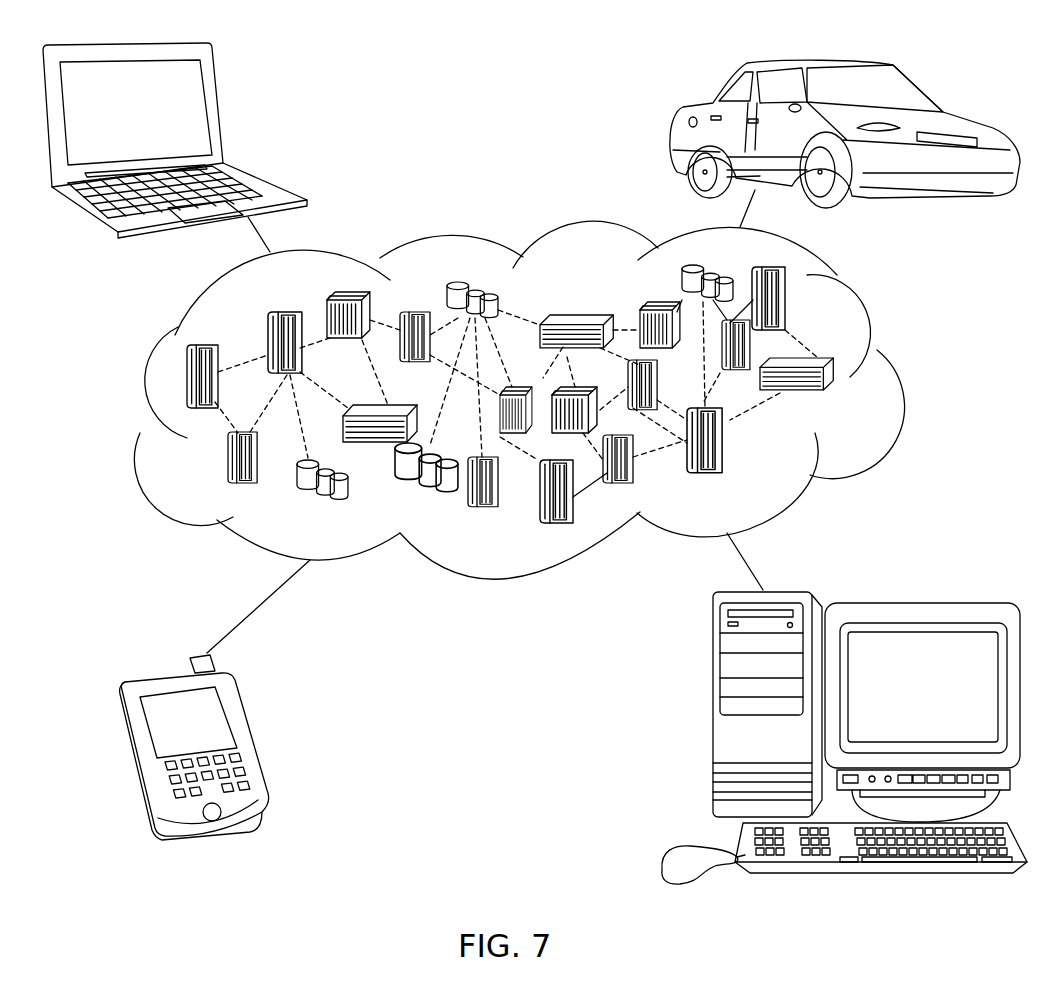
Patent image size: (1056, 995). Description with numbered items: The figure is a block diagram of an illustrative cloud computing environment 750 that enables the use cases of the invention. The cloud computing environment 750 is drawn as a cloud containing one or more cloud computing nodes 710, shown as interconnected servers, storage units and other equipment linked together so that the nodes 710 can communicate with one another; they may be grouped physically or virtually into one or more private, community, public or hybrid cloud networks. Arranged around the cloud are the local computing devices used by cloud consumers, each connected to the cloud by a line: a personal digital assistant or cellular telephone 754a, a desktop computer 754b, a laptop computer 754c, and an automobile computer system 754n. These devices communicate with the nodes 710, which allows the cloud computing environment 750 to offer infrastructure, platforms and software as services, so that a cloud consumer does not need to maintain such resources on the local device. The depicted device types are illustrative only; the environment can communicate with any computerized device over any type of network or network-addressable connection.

The cloud computing environment 750 is at (880, 313).
The cloud computing nodes 710 is at (852, 398).
The personal digital assistant (PDA) or cellular telephone 754a is at (243, 727).
The desktop computer 754b is at (713, 717).
The laptop computer 754c is at (218, 100).
The automobile computer system 754n is at (688, 106).